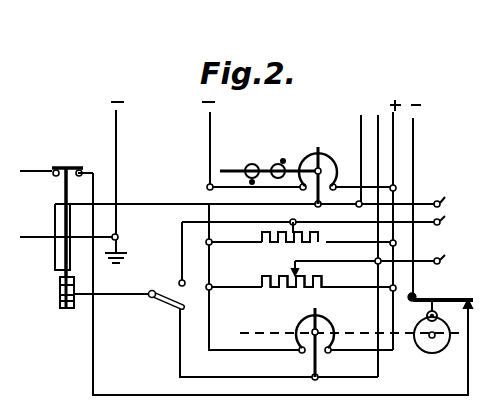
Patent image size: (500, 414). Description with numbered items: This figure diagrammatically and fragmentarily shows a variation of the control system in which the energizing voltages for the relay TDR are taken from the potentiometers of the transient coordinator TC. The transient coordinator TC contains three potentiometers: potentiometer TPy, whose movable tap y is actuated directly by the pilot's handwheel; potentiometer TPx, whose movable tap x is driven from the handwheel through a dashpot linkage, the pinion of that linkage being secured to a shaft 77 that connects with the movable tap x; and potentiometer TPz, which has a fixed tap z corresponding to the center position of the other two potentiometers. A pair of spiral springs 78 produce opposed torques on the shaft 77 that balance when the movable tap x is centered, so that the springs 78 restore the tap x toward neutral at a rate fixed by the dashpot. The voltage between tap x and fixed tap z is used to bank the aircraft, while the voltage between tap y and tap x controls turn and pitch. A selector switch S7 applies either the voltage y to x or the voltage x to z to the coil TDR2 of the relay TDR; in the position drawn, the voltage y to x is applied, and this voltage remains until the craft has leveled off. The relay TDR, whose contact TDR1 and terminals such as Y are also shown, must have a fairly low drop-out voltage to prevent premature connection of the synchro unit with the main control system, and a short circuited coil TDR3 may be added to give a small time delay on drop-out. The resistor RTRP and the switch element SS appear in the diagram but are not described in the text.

The relay contact TDR1 is at (71, 162).
The relay TDR is at (44, 279).
The coil TDR2 is at (57, 287).
The short circuited coil TDR3 is at (62, 303).
The selector switch S7 is at (165, 309).
The shaft 77 is at (233, 170).
The spiral springs 78 is at (271, 165).
The potentiometer TPx is at (336, 163).
The potentiometer TPz is at (262, 234).
The rheostat RTRP is at (290, 290).
The potentiometer TPy is at (331, 322).
The transient coordinator TC is at (459, 170).
The selector switch SS is at (459, 292).
The movable tap x is at (305, 148).
The movable tap y is at (309, 311).
The fixed tap z is at (298, 233).
The terminal Y is at (453, 260).